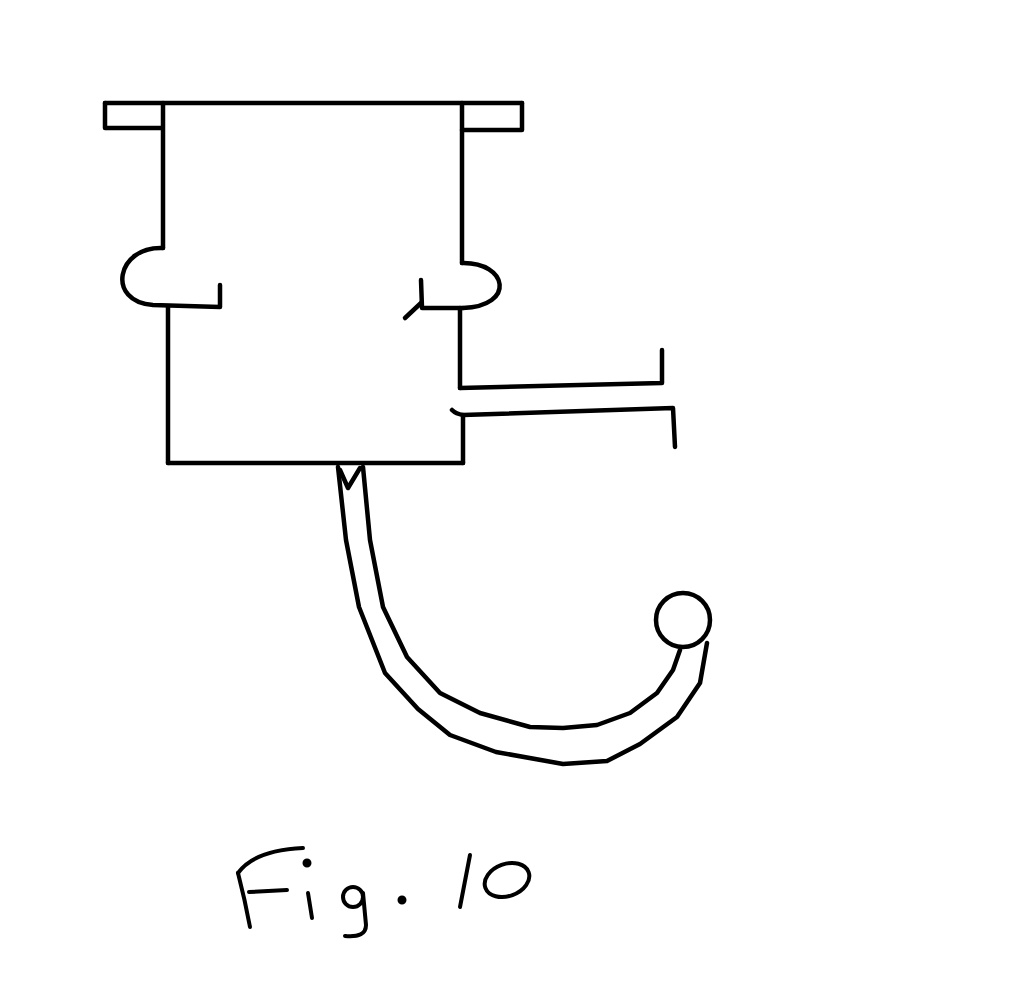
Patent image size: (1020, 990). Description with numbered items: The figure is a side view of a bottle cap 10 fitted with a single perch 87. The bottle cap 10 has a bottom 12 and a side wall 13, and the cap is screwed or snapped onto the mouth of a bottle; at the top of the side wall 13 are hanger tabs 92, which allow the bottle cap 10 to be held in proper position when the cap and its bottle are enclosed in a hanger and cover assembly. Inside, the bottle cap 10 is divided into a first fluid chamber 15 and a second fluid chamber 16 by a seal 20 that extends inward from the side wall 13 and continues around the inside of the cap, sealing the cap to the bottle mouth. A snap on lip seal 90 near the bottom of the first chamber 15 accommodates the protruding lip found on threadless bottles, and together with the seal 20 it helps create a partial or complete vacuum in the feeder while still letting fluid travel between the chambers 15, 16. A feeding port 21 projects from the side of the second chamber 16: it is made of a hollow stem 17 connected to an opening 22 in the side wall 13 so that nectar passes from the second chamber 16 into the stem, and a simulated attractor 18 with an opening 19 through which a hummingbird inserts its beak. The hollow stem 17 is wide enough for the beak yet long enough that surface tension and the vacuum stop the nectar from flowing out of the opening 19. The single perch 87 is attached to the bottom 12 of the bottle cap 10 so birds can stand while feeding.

The bottle cap 10 is at (653, 193).
The bottom 12 is at (250, 467).
The side wall 13 is at (162, 140).
The first fluid chamber 15 is at (312, 183).
The second fluid chamber 16 is at (314, 385).
The hollow stem 17 is at (558, 415).
The simulated attractor 18 is at (667, 360).
The opening 19 is at (677, 392).
The seal 20 is at (425, 313).
The feeding port 21 is at (612, 376).
The opening 22 is at (438, 463).
The single perch 87 is at (697, 697).
The snap on lip seal 90 is at (492, 273).
The hanger tabs 92 is at (522, 108).